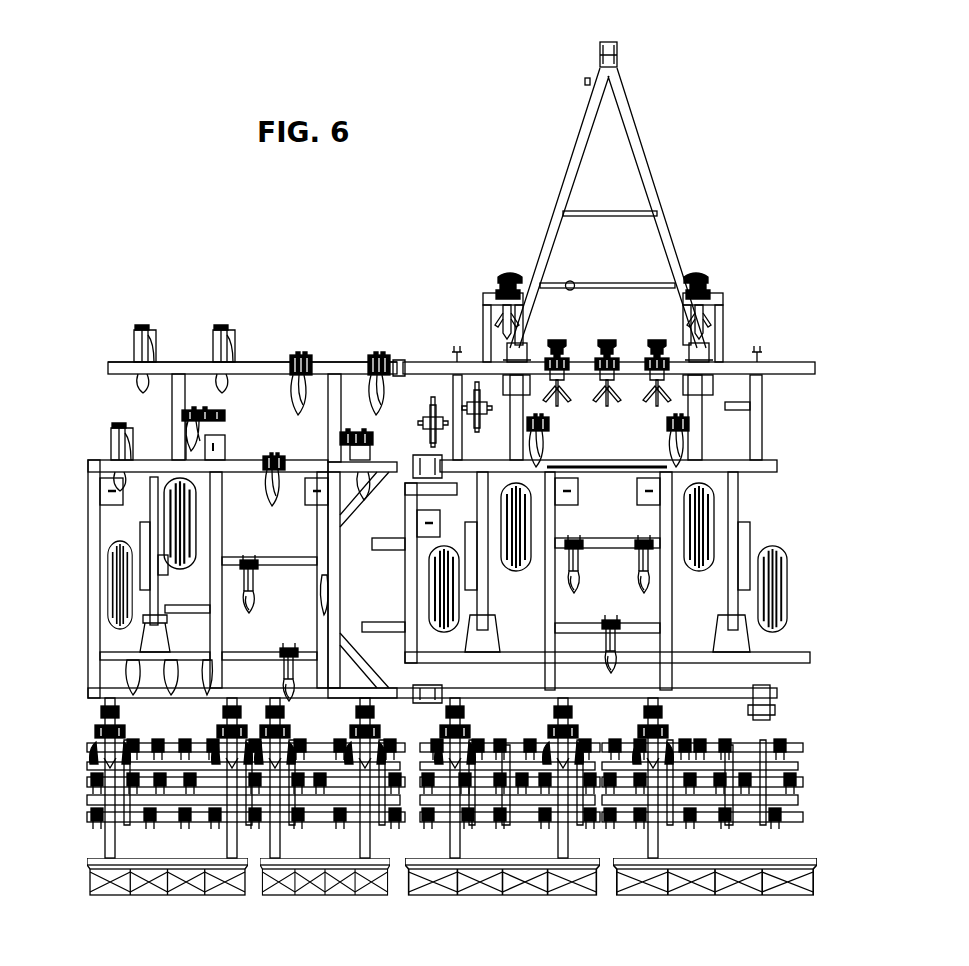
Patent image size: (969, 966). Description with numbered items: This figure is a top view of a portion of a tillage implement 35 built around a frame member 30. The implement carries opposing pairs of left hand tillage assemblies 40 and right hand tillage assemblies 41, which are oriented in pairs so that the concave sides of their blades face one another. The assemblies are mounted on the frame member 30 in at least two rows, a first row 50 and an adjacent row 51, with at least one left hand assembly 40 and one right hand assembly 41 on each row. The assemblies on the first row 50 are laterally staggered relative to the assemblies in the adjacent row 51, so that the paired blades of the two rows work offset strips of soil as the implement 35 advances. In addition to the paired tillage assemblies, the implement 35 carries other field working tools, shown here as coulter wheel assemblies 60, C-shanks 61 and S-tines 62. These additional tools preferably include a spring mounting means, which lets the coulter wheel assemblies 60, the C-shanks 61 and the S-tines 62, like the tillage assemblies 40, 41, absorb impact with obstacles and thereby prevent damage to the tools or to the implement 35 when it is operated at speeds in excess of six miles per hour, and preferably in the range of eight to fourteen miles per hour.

The frame member 30 is at (337, 368).
The tillage implement 35 is at (500, 187).
The left hand tillage assembly 40 is at (223, 315).
The right hand tillage assembly 41 is at (214, 404).
The first row 50 is at (113, 340).
The second row 51 is at (93, 438).
The coulter wheel assembly 60 is at (272, 597).
The C-shank 61 is at (500, 263).
The S-tine 62 is at (431, 397).